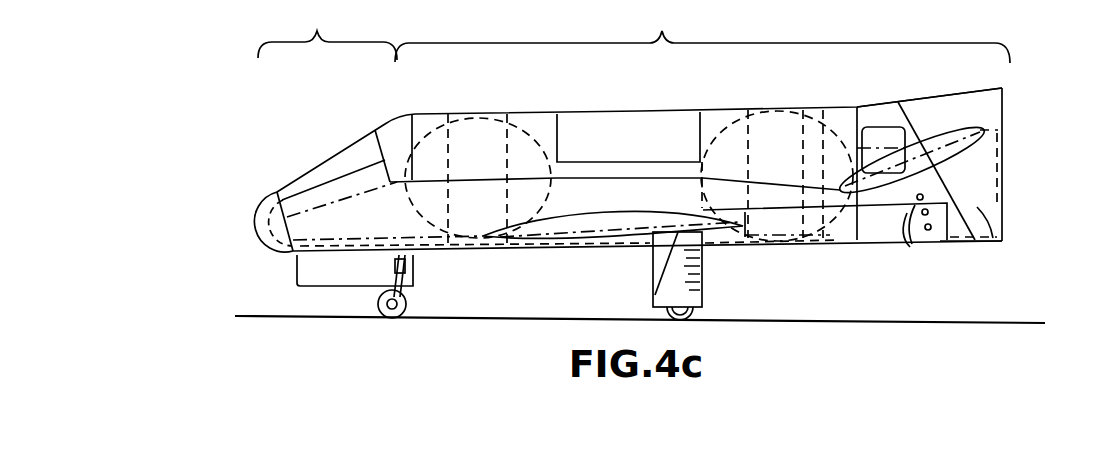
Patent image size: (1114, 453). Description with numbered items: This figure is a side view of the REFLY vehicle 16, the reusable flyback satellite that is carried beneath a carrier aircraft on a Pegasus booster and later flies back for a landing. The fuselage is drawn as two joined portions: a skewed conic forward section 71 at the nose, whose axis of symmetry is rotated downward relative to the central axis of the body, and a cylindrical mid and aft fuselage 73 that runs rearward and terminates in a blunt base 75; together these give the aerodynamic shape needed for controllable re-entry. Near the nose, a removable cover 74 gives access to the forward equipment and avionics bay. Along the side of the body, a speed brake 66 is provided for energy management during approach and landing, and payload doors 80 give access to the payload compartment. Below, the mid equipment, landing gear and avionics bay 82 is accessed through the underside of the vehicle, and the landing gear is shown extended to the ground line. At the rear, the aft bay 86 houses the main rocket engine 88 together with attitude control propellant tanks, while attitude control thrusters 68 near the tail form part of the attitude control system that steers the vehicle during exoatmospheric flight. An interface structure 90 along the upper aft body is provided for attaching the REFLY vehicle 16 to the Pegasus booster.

The REFLY vehicle 16 is at (266, 167).
The skewed conic forward section 71 is at (327, 31).
The cylindrical mid and aft fuselage 73 is at (702, 33).
The removable cover 74 is at (323, 158).
The speed brake 66 is at (612, 192).
The payload doors 80 is at (700, 127).
The aft bay 86 is at (873, 102).
The interface structure 90 is at (977, 88).
The blunt base 75 is at (1003, 109).
The main rocket engine 88 is at (1003, 240).
The attitude control thrusters 68 is at (908, 240).
The mid equipment, landing gear and avionics bay 82 is at (578, 252).